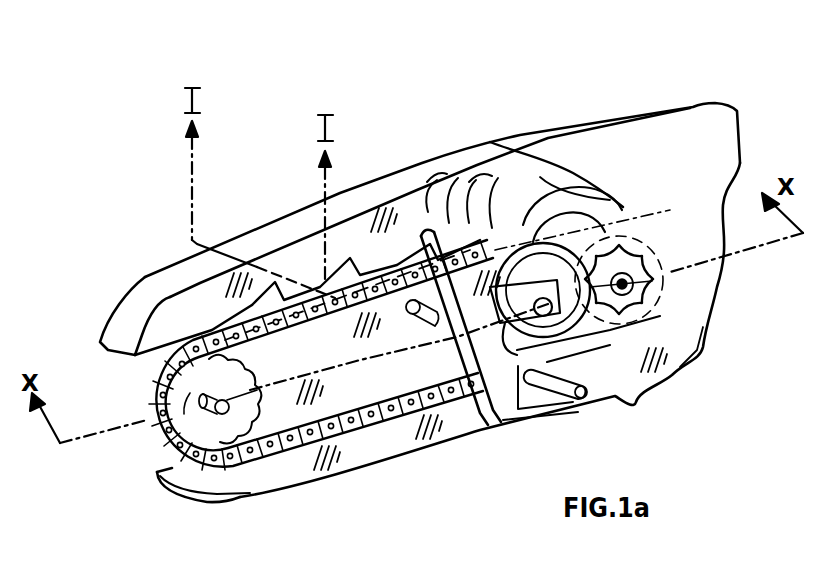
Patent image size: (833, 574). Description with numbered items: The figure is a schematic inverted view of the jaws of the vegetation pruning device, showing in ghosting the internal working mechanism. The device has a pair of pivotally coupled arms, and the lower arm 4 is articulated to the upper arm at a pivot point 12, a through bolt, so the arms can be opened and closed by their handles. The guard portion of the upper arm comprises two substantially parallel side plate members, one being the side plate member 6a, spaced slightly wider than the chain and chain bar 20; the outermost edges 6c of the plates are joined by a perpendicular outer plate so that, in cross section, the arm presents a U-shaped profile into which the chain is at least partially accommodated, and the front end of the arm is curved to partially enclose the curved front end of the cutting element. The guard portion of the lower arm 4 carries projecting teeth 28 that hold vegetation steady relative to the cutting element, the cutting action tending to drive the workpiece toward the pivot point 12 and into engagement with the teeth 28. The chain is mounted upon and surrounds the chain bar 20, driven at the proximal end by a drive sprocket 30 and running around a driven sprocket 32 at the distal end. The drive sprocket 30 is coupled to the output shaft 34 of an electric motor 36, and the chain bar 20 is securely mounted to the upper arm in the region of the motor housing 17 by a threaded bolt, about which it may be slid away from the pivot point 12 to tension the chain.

The lower arm 4 is at (156, 300).
The side plate member 6a is at (257, 477).
The outermost edge 6c is at (320, 481).
The pivot point 12 is at (457, 355).
The motor housing 17 is at (663, 143).
The chain bar 20 is at (362, 380).
The projecting teeth 28 is at (222, 318).
The drive sprocket 30 is at (656, 289).
The driven sprocket 32 is at (155, 408).
The output shaft 34 is at (600, 228).
The electric motor 36 is at (543, 187).